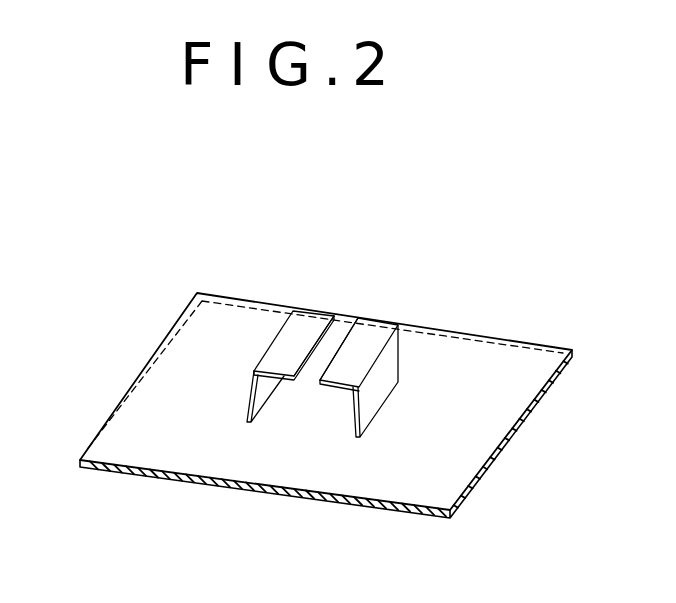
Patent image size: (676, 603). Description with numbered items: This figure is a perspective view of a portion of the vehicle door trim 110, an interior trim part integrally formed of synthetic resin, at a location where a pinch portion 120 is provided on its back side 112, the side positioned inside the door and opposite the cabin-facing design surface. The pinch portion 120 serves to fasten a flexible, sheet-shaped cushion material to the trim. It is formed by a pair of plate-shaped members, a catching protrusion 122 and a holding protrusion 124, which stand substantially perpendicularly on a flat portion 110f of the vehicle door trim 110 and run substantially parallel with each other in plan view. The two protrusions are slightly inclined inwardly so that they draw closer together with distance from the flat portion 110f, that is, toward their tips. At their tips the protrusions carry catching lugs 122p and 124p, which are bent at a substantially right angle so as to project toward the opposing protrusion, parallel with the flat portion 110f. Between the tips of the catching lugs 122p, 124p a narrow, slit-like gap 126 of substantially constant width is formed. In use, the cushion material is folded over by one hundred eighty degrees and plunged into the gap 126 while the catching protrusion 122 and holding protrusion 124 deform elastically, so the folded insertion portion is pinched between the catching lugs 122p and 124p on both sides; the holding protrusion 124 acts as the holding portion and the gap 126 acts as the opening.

The vehicle door trim 110 is at (302, 428).
The flat portion 110f is at (215, 488).
The back side 112 is at (475, 437).
The pinch portion 120 is at (303, 393).
The catching protrusion 122 is at (267, 410).
The catching lug 122p is at (295, 337).
The holding protrusion 124 is at (402, 346).
The catching lug 124p is at (373, 336).
The gap 126 is at (349, 310).